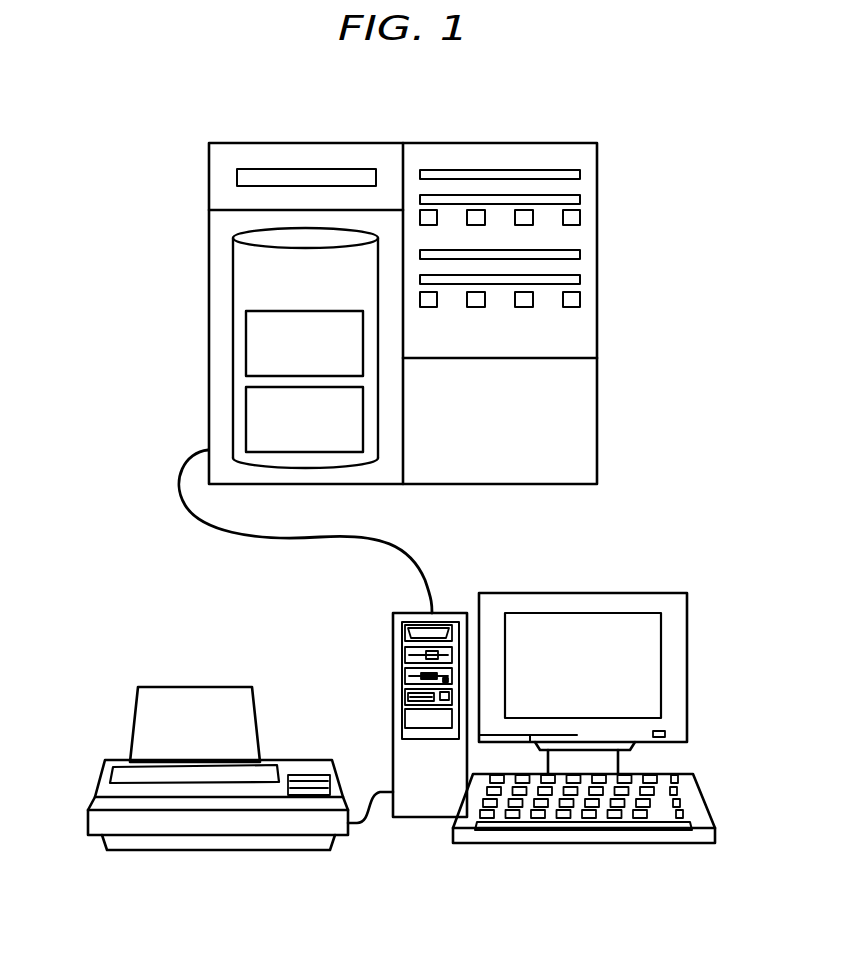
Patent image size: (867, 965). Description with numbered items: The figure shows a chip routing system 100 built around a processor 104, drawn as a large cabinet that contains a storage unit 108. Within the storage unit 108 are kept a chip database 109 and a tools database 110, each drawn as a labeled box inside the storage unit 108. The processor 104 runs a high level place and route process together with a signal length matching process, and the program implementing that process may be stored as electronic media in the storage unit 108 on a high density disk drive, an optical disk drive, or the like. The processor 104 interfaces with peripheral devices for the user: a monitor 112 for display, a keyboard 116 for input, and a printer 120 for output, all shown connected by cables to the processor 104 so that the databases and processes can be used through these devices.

The chip routing system 100 is at (574, 119).
The processor 104 is at (598, 402).
The storage unit 108 is at (233, 268).
The chip database 109 is at (246, 330).
The tools database 110 is at (246, 407).
The monitor 112 is at (688, 620).
The keyboard 116 is at (703, 798).
The printer 120 is at (93, 783).